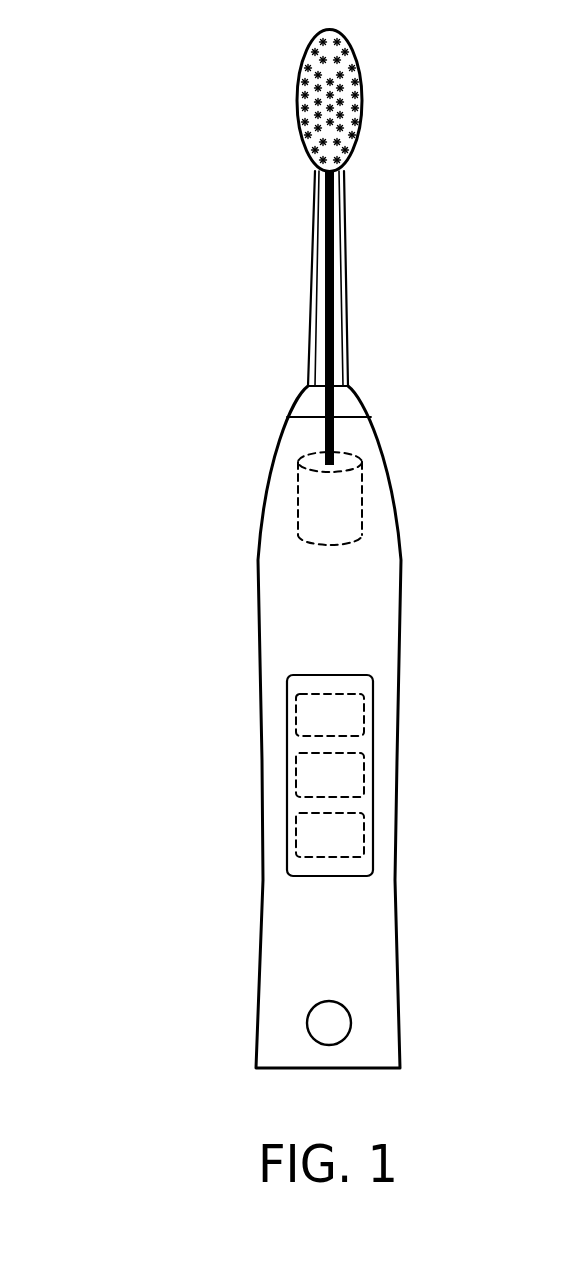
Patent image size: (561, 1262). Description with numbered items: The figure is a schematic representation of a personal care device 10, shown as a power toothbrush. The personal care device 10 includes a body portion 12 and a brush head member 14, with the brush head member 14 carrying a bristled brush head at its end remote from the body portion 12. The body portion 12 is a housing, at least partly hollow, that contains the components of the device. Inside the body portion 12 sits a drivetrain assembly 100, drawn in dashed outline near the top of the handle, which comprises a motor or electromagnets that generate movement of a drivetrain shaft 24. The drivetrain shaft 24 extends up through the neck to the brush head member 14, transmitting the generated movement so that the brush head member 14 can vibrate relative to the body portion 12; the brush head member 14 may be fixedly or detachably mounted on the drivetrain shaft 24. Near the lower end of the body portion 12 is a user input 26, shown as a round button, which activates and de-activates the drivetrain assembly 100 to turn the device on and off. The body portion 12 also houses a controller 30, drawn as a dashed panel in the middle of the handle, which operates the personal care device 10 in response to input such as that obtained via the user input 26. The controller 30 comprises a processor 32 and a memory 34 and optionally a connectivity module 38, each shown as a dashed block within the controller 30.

The personal care device 10 is at (112, 78).
The body portion 12 is at (236, 596).
The brush head member 14 is at (290, 259).
The drivetrain shaft 24 is at (328, 329).
The user input 26 is at (317, 1022).
The controller 30 is at (293, 743).
The processor 32 is at (355, 714).
The memory 34 is at (355, 772).
The connectivity module 38 is at (355, 836).
The drivetrain assembly 100 is at (348, 510).